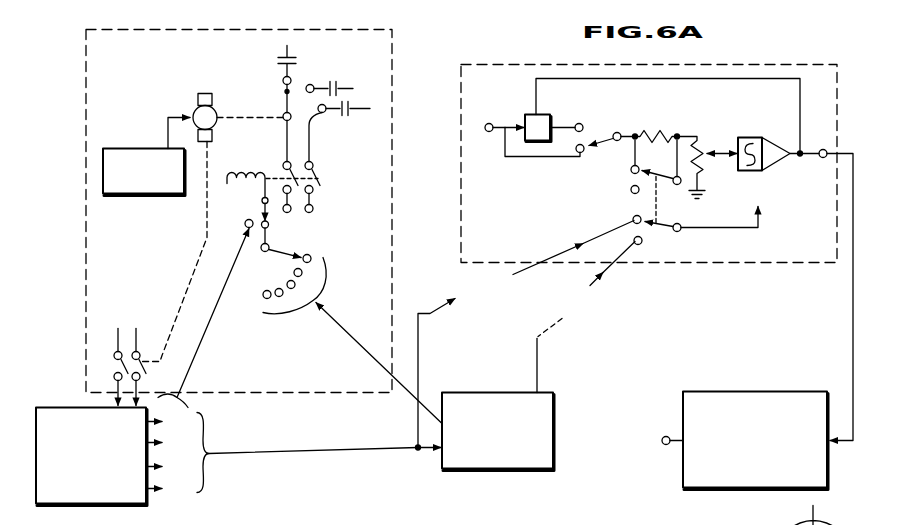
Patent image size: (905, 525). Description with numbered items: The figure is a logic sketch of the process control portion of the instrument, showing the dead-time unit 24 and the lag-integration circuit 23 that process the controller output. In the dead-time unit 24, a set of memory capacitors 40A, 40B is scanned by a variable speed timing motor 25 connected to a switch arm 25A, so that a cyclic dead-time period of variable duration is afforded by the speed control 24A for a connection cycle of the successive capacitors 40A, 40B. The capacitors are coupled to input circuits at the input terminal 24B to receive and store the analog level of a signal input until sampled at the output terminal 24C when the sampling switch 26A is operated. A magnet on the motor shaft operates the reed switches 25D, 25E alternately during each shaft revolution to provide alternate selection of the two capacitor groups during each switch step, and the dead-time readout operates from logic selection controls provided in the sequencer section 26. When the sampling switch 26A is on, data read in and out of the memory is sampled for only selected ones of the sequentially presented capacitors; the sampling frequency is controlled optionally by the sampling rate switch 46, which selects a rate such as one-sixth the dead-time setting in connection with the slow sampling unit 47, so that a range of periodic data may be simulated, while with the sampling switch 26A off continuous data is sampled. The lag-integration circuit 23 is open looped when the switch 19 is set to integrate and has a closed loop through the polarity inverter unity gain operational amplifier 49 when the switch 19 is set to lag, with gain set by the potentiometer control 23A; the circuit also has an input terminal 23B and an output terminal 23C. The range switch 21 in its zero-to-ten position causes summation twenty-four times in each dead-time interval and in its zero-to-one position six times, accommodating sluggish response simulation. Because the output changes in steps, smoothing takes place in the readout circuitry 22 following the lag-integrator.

The switch 19 is at (604, 136).
The range switch 21 is at (658, 209).
The readout circuitry 22 is at (783, 391).
The lag-integration circuit 23 is at (728, 262).
The potentiometer control 23A is at (715, 149).
The input terminal 23B is at (506, 101).
The output terminal 23C is at (821, 277).
The dead-time unit 24 is at (302, 394).
The speed control 24A is at (153, 148).
The input terminal 24B is at (291, 211).
The output terminal 24C is at (313, 206).
The variable speed timing motor 25 is at (200, 96).
The switch arm 25A is at (284, 106).
The reed switch 25D is at (114, 360).
The reed switch 25E is at (142, 358).
The sequencer section 26 is at (59, 409).
The sampling switch 26A is at (262, 200).
The memory capacitor 40A is at (345, 115).
The memory capacitor 40B is at (333, 81).
The sampling rate switch 46 is at (283, 256).
The slow sampling unit 47 is at (473, 470).
The polarity inverter unity gain operational amplifier 49 is at (540, 119).